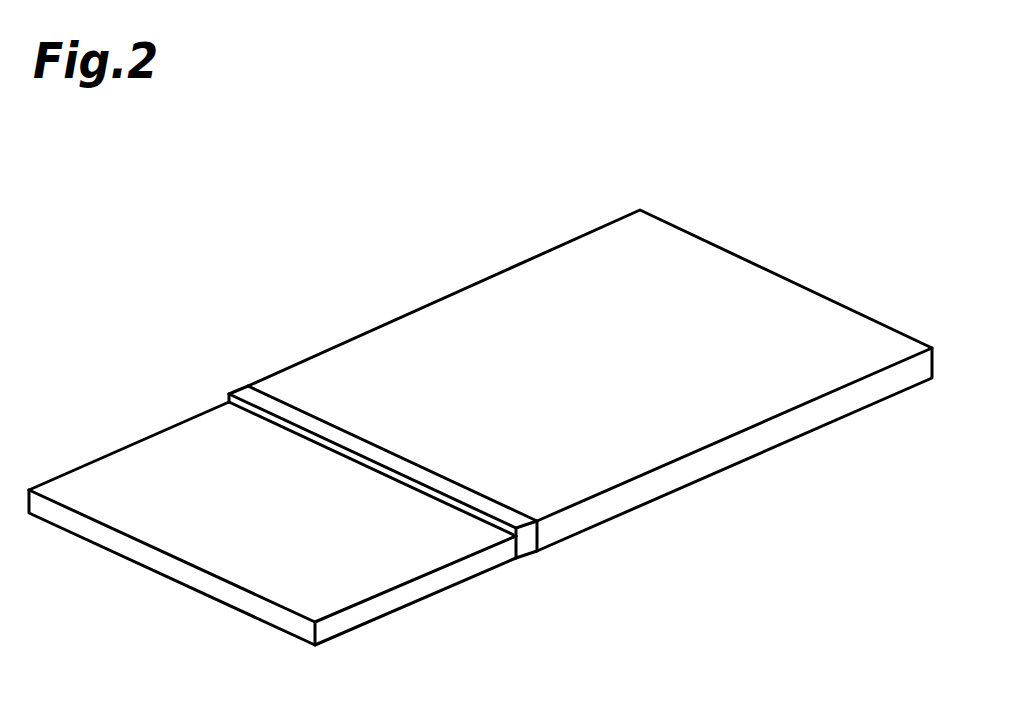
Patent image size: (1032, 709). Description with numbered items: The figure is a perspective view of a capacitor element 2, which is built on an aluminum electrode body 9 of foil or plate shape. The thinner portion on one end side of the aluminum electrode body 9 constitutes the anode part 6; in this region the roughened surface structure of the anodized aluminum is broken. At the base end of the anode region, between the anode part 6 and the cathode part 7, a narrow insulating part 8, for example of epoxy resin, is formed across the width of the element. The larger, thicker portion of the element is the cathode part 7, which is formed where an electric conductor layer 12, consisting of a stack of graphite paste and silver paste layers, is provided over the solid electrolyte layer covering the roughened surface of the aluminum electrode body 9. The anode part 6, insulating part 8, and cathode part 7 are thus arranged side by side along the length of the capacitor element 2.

The capacitor element 2 is at (142, 316).
The aluminum electrode body 9 is at (272, 540).
The anode part 6 is at (383, 575).
The insulating part 8 is at (518, 522).
The electric conductor layer 12 is at (590, 387).
The cathode part 7 is at (642, 459).